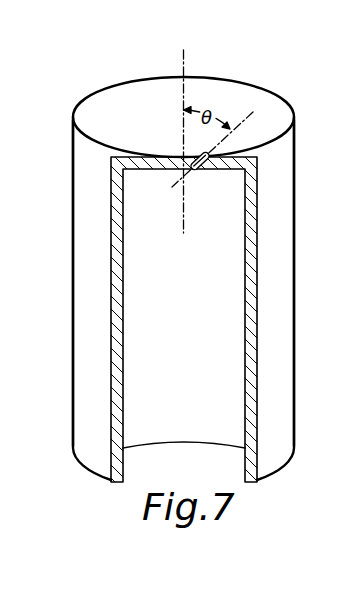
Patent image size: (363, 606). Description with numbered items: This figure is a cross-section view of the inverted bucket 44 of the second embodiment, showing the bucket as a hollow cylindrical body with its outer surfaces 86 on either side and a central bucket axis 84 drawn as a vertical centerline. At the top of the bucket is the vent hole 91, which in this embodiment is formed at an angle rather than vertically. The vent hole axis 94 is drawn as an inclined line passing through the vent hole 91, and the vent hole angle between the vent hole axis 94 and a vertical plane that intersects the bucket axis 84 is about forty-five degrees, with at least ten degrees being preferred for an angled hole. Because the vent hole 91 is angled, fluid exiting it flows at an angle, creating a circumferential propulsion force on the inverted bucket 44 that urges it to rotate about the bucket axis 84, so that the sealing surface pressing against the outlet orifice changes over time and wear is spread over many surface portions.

The inverted bucket 44 is at (95, 86).
The bucket axis 84 is at (184, 61).
The outer cylindrical surface 86 is at (82, 290).
The vent hole 91 is at (210, 167).
The vent hole axis 94 is at (250, 123).